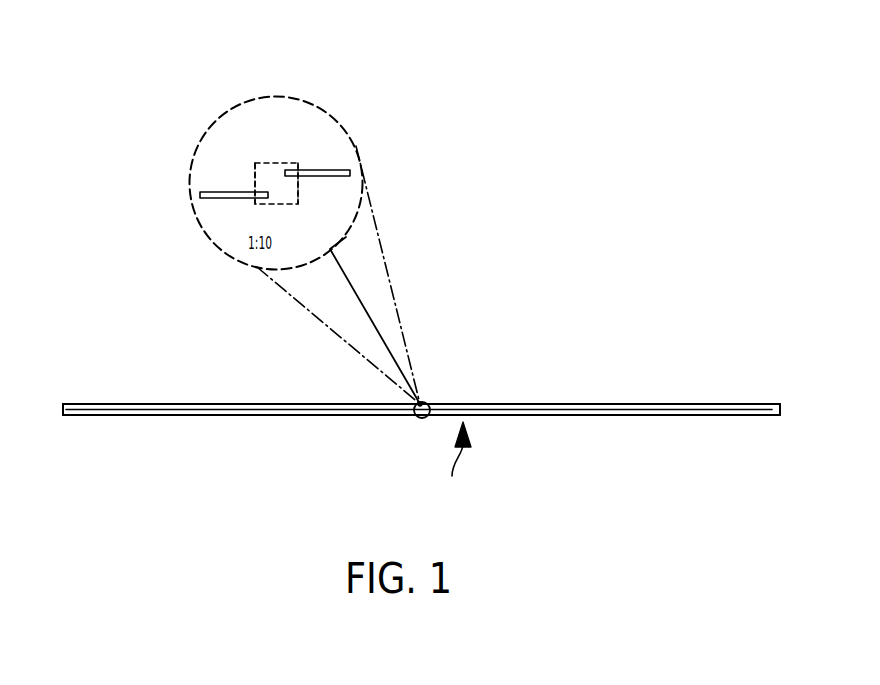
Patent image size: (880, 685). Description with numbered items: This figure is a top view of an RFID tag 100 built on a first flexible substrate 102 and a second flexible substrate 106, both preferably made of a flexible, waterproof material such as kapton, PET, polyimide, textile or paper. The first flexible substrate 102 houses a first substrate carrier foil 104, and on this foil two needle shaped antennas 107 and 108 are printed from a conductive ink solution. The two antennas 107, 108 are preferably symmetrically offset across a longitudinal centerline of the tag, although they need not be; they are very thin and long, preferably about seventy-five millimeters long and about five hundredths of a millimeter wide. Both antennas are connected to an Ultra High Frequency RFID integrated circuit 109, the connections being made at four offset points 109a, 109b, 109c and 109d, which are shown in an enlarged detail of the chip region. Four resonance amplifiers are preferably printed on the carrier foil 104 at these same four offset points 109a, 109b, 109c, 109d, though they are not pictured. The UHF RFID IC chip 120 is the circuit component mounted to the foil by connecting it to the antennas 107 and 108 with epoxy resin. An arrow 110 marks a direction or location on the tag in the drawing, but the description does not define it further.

The RFID tag 100 is at (743, 416).
The first flexible substrate 102 is at (482, 403).
The first substrate carrier foil 104 is at (366, 404).
The second flexible substrate 106 is at (527, 417).
The needle shaped antenna 107 is at (613, 404).
The needle shaped antenna 108 is at (190, 404).
The UHF RFID integrated circuit 109 is at (425, 398).
The offset point 109a is at (255, 170).
The offset point 109b is at (341, 169).
The offset point 109c is at (297, 197).
The offset point 109d is at (232, 198).
The direction arrow 110 is at (455, 464).
The UHF RFID IC chip 120 is at (278, 186).